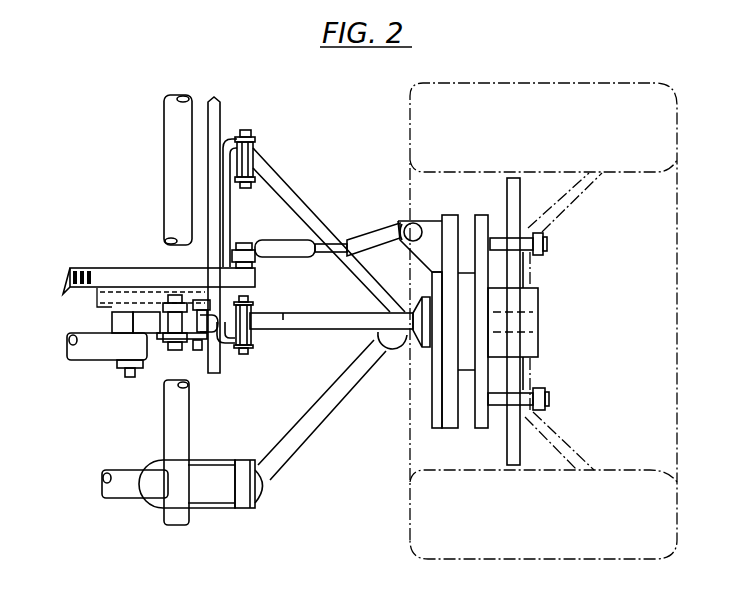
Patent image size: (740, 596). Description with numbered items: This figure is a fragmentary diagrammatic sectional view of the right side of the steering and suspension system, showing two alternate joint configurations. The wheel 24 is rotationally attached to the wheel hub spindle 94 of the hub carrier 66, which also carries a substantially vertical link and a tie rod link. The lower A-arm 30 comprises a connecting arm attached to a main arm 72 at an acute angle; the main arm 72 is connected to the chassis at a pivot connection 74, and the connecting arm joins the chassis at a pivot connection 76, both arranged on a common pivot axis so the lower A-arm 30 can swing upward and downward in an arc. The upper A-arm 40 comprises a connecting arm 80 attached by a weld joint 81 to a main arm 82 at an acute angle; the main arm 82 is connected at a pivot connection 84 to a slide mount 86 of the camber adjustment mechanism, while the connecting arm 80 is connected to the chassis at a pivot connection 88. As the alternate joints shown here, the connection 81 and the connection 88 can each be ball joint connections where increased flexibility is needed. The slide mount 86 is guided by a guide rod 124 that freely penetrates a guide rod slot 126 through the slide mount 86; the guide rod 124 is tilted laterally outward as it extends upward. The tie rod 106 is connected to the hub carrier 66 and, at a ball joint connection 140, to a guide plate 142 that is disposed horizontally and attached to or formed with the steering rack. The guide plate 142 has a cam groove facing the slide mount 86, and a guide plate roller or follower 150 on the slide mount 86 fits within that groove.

The wheel 24 is at (408, 513).
The lower A-arm 30 is at (295, 176).
The upper A-arm 40 is at (335, 432).
The hub carrier 66 is at (427, 216).
The main arm 72 is at (265, 312).
The pivot connection 74 is at (253, 335).
The pivot connection 76 is at (257, 147).
The connecting arm 80 is at (287, 462).
The weld joint 81 is at (377, 338).
The main arm 82 is at (317, 312).
The pivot connection 84 is at (198, 350).
The slide mount 86 is at (160, 320).
The pivot connection 88 is at (412, 223).
The wheel hub spindle 94 is at (548, 290).
The tie rod 106 is at (352, 232).
The guide rod 124 is at (110, 322).
The guide rod slot 126 is at (182, 335).
The ball joint connection 140 is at (245, 243).
The guide plate 142 is at (148, 266).
The guide plate roller or follower 150 is at (135, 290).